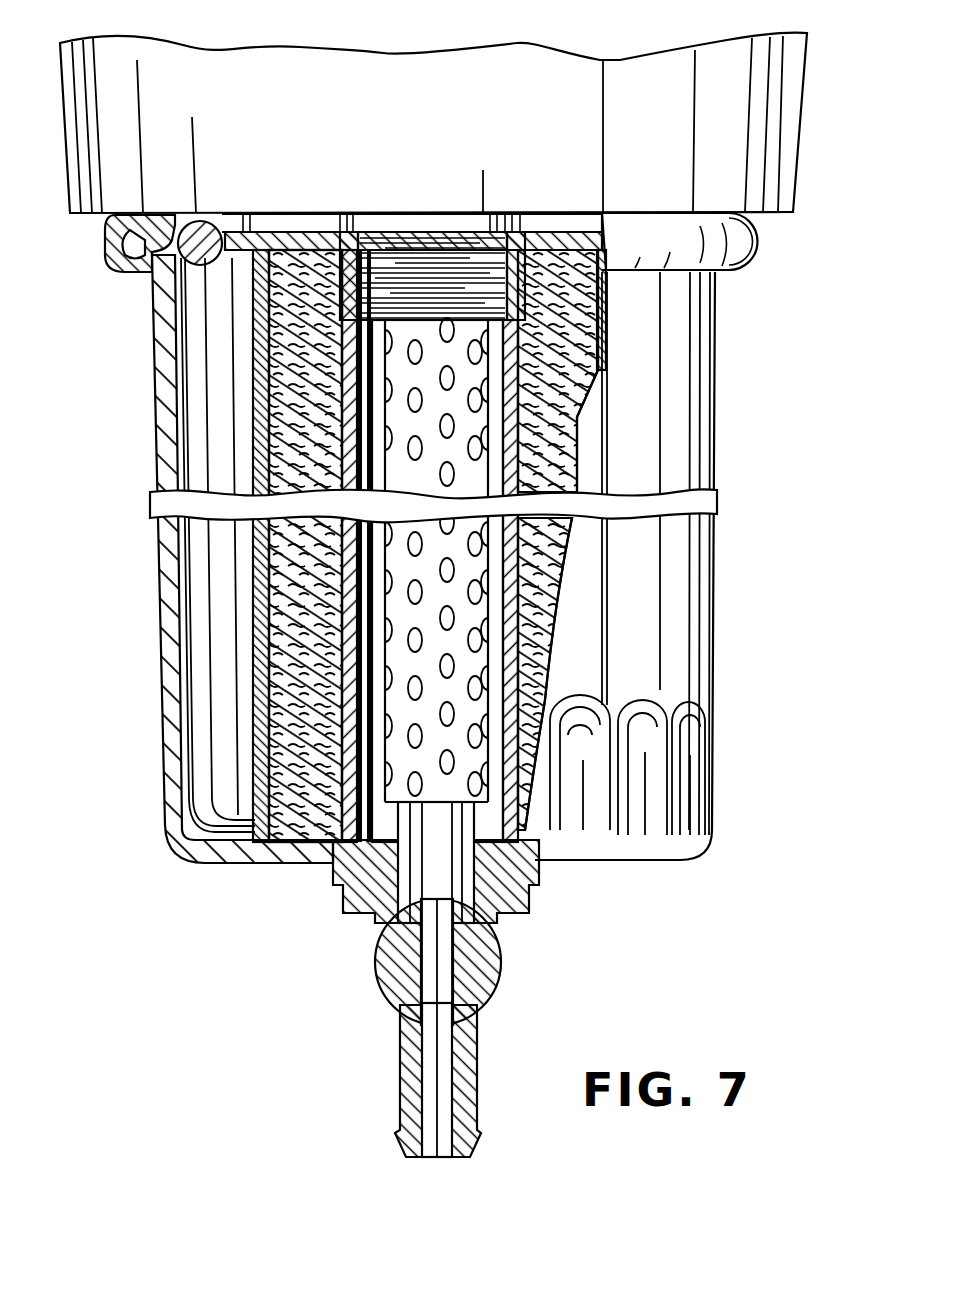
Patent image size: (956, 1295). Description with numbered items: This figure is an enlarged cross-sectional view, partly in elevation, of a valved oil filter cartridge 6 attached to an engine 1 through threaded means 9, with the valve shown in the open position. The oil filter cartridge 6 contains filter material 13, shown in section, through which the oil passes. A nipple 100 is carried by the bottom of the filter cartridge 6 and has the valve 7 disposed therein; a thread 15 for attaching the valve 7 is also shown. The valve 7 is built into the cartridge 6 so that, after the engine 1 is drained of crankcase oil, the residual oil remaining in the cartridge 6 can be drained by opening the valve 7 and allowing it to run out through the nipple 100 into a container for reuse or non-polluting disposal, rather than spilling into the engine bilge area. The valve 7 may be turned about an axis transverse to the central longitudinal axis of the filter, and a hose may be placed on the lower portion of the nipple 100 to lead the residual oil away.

The engine 1 is at (735, 168).
The threaded means 9 is at (420, 277).
The filter material 13 is at (290, 720).
The oil filter cartridge 6 is at (668, 632).
The thread 15 is at (540, 855).
The valve 7 is at (378, 965).
The nipple 100 is at (485, 1020).